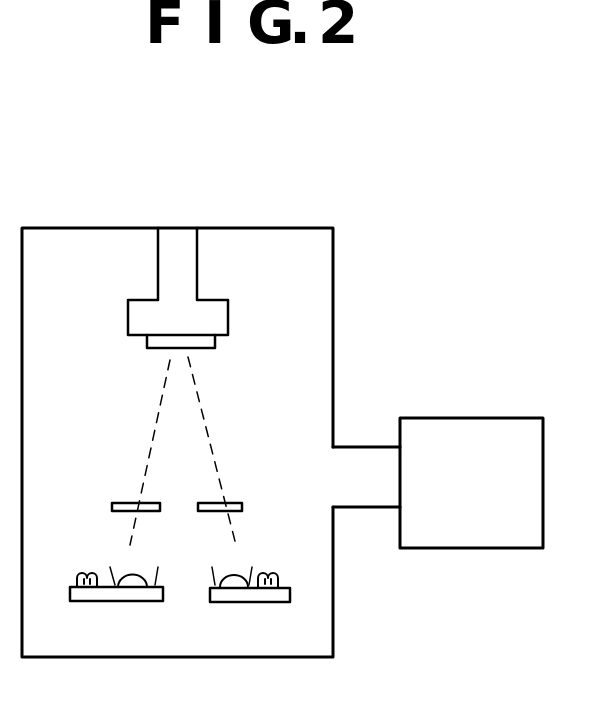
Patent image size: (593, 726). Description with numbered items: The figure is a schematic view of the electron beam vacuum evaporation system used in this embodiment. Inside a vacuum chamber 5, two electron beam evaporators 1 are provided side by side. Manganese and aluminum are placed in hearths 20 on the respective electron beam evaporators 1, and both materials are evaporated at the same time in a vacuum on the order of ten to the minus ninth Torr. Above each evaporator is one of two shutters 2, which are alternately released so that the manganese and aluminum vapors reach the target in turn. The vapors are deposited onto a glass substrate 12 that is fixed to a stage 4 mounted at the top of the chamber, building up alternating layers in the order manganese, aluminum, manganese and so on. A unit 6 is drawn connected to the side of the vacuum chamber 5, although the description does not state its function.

The electron beam evaporator 1 is at (87, 603).
The shutter 2 is at (128, 503).
The stage 4 is at (143, 302).
The vacuum chamber 5 is at (335, 297).
The control unit 6 is at (485, 500).
The glass substrate 12 is at (148, 349).
The hearth 20 is at (115, 567).